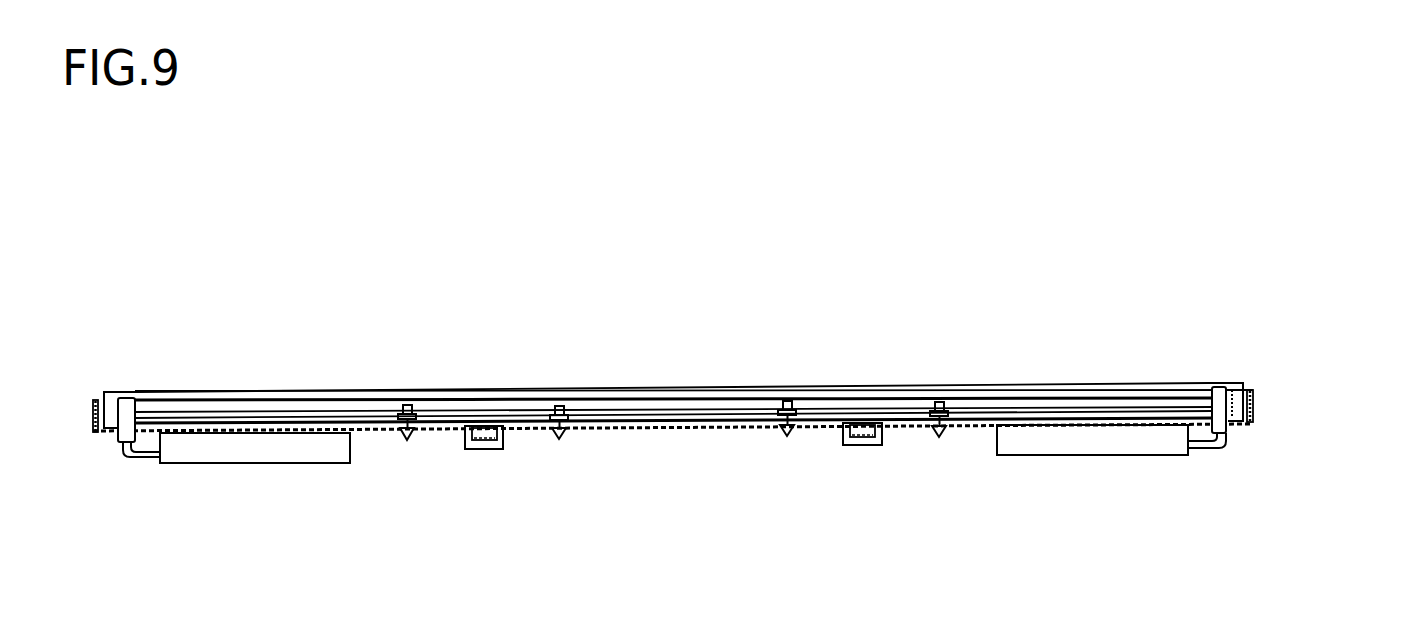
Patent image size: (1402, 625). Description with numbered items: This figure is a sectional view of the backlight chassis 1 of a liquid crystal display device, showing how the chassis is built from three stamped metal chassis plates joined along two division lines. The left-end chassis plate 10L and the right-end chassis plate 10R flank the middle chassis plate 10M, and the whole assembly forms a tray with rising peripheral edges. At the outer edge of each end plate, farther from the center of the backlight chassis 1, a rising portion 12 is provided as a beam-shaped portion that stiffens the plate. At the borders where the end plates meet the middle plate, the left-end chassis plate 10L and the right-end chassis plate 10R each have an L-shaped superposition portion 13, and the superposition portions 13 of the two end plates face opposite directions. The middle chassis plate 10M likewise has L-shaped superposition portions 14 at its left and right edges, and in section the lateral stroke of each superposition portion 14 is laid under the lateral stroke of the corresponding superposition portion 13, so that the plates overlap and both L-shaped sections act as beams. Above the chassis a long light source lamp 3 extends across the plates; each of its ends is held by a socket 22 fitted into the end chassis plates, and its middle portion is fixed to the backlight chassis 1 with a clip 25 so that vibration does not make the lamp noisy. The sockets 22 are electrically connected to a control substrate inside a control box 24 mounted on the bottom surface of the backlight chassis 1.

The backlight chassis 1 is at (134, 340).
The light source lamp 3 is at (672, 398).
The clip 25 is at (785, 396).
The socket 22 is at (1213, 383).
The rising portion 12 is at (1255, 397).
The left-end chassis plate 10L is at (373, 433).
The middle chassis plate 10M is at (670, 430).
The right-end chassis plate 10R is at (910, 428).
The superposition portion 13 is at (461, 436).
The superposition portion 14 is at (487, 450).
The control box 24 is at (1090, 457).